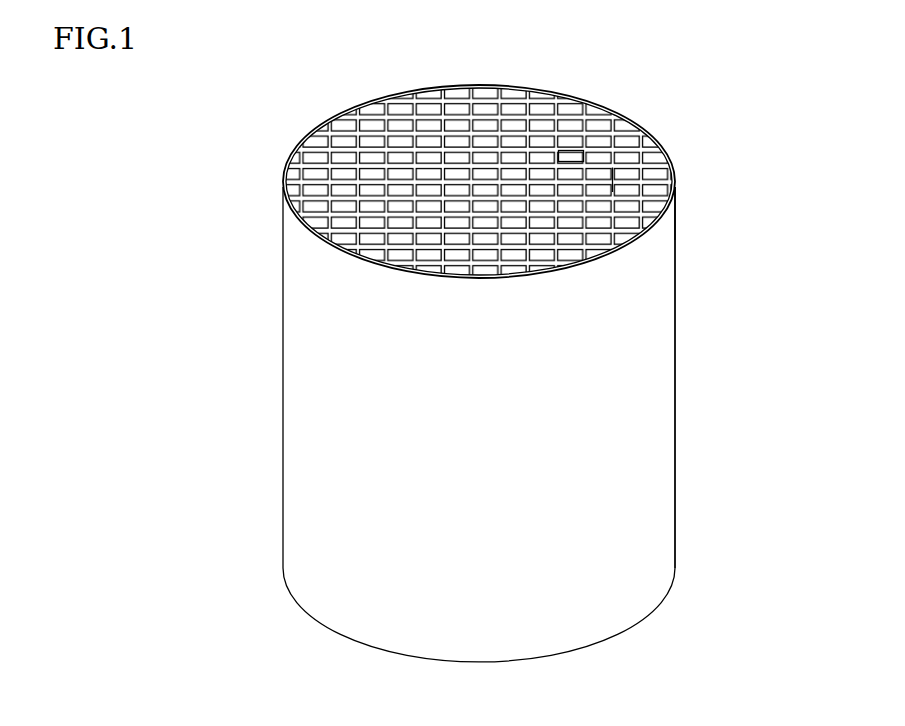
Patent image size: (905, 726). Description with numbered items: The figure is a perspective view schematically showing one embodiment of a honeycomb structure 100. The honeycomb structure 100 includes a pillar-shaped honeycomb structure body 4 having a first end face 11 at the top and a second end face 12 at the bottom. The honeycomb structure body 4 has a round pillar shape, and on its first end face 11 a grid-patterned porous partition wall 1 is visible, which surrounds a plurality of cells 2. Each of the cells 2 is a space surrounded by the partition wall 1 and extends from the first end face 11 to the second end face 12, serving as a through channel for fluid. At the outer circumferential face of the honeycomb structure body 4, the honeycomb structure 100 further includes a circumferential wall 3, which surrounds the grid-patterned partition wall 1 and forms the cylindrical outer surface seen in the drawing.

The honeycomb structure 100 is at (812, 33).
The partition wall 1 is at (583, 148).
The cells 2 is at (633, 168).
The circumferential wall 3 is at (642, 313).
The honeycomb structure body 4 is at (680, 223).
The first end face 11 is at (357, 103).
The second end face 12 is at (310, 624).